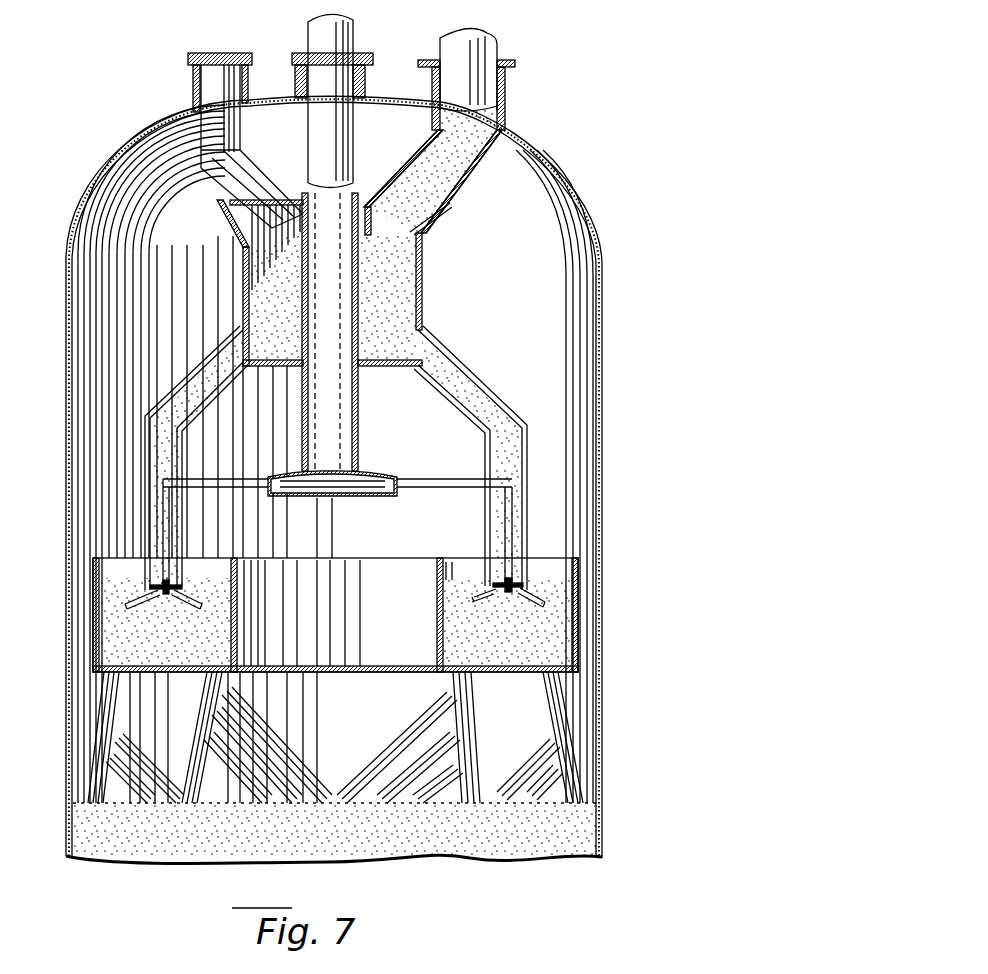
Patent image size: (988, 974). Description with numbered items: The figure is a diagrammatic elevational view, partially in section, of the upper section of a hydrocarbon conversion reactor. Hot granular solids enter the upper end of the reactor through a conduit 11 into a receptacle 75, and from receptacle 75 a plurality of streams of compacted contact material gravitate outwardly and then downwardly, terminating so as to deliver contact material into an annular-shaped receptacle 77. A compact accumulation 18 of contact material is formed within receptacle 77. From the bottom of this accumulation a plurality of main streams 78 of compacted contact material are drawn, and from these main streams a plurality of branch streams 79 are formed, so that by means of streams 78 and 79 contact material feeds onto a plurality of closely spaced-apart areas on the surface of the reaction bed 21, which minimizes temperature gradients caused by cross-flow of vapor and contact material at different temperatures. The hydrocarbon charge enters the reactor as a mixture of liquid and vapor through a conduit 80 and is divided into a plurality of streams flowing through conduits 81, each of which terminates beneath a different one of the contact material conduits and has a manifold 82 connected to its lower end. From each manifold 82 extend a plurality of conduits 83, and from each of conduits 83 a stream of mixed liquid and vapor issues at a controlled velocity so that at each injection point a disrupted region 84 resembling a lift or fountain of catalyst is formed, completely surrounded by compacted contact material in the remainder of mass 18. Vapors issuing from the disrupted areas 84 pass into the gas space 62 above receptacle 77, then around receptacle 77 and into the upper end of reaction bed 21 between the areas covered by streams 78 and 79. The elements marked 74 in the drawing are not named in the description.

The conduit 11 is at (503, 93).
The compact accumulation of contact material 18 is at (557, 641).
The reaction bed 21 is at (381, 853).
The gas space 62 is at (567, 495).
The conduits 74 is at (456, 185).
The receptacle 75 is at (421, 283).
The annular-shaped receptacle 77 is at (433, 577).
The main streams of compacted contact material 78 is at (105, 715).
The branch streams 79 is at (135, 790).
The conduit 80 is at (345, 163).
The conduits 81 is at (257, 488).
The manifold 82 is at (170, 588).
The conduits 83 is at (477, 597).
The disrupted region 84 is at (203, 603).